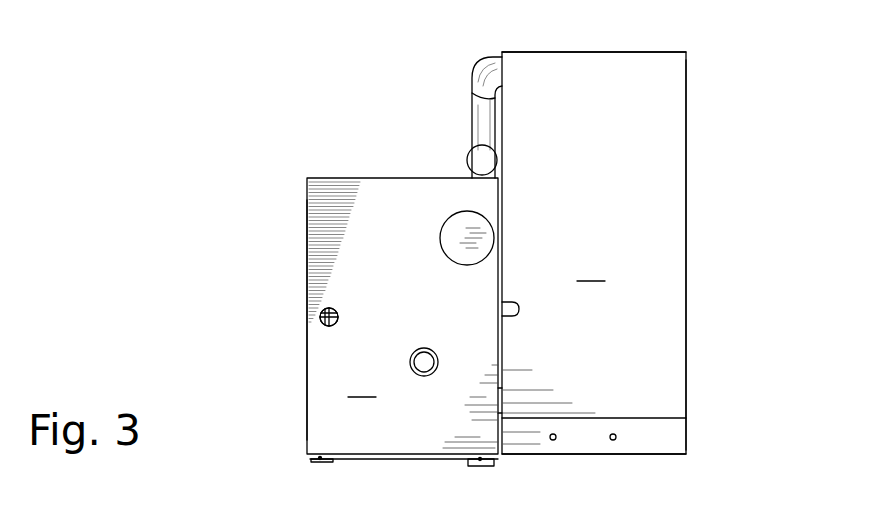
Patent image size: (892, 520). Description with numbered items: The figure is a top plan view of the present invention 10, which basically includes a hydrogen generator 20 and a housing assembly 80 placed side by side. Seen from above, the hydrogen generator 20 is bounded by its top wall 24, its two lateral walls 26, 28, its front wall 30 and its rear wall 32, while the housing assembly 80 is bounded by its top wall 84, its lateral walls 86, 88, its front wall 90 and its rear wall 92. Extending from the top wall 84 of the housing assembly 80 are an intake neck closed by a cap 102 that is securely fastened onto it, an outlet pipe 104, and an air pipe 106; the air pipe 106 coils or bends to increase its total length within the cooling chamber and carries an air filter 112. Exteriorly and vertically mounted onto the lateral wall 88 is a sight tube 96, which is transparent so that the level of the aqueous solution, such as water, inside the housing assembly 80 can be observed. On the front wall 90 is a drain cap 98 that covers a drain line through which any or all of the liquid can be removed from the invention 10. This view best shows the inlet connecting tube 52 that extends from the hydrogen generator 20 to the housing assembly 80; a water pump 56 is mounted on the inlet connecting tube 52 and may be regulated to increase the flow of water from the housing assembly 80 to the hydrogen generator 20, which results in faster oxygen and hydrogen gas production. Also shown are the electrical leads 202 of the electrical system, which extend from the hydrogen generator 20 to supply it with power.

The present invention 10 is at (240, 168).
The hydrogen generator 20 is at (700, 213).
The top wall 24 is at (553, 216).
The lateral wall 26 is at (472, 93).
The lateral wall 28 is at (686, 262).
The front wall 30 is at (660, 438).
The rear wall 32 is at (645, 52).
The inlet connecting tube 52 is at (472, 115).
The water pump 56 is at (468, 156).
The housing assembly 80 is at (296, 327).
The top wall 84 is at (402, 316).
The lateral wall 86 is at (307, 272).
The lateral wall 88 is at (498, 210).
The front wall 90 is at (360, 456).
The rear wall 92 is at (353, 178).
The sight tube 96 is at (519, 309).
The drain cap 98 is at (468, 462).
The cap 102 is at (440, 238).
The outlet pipe 104 is at (410, 362).
The air pipe 106 is at (321, 313).
The air filter 112 is at (321, 318).
The electrical leads 202 is at (556, 439).